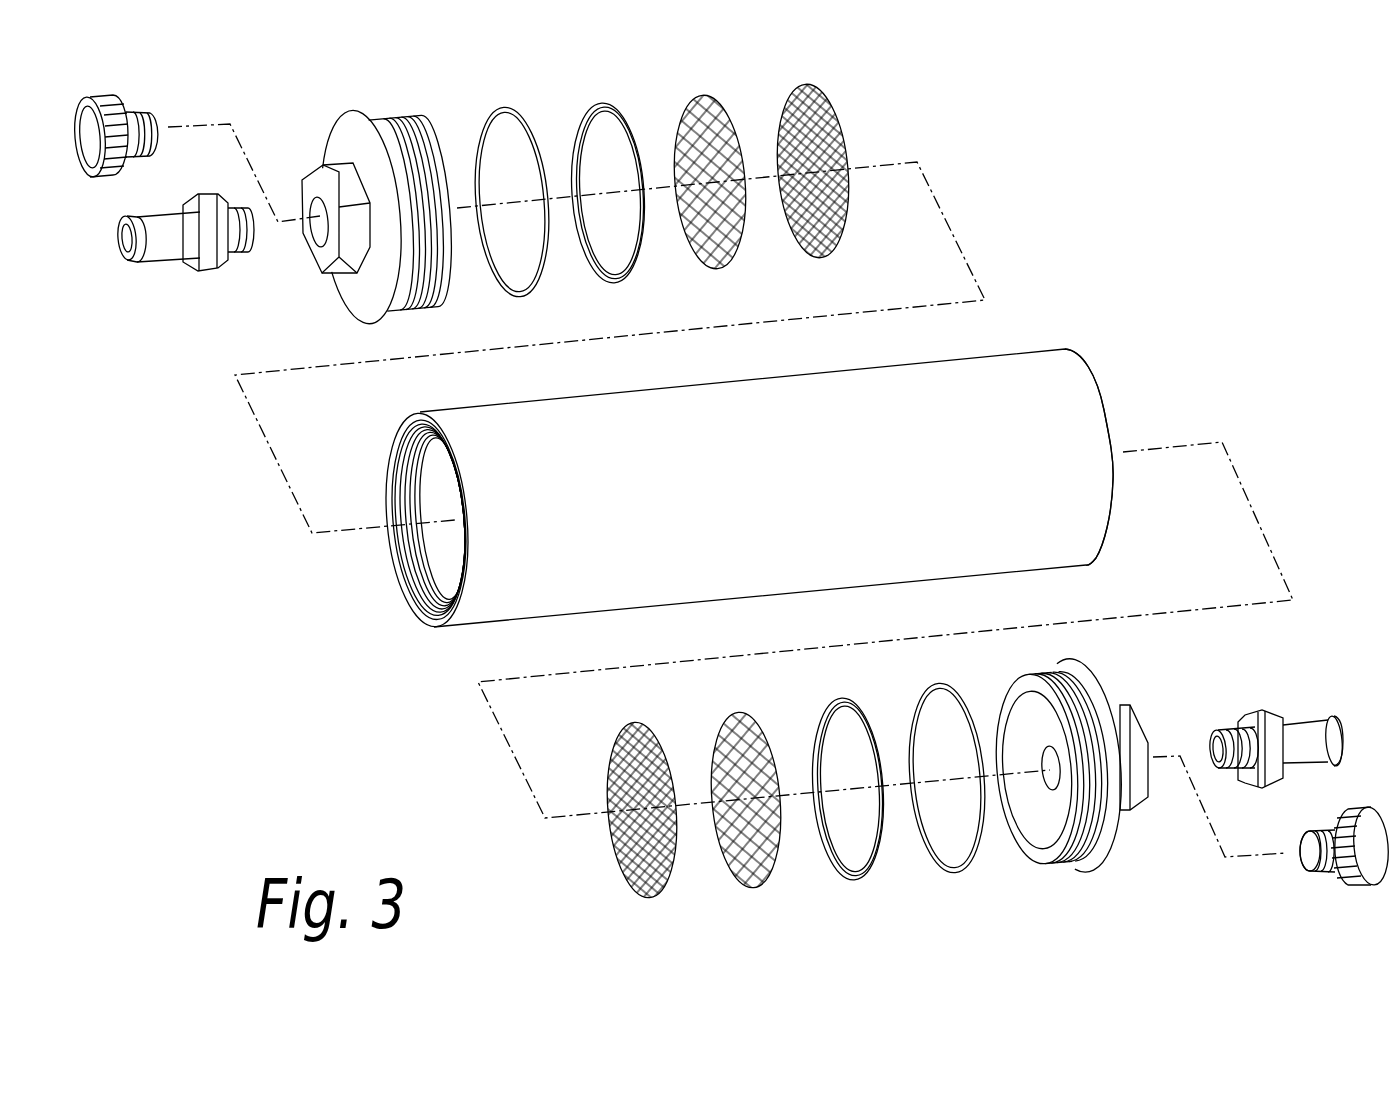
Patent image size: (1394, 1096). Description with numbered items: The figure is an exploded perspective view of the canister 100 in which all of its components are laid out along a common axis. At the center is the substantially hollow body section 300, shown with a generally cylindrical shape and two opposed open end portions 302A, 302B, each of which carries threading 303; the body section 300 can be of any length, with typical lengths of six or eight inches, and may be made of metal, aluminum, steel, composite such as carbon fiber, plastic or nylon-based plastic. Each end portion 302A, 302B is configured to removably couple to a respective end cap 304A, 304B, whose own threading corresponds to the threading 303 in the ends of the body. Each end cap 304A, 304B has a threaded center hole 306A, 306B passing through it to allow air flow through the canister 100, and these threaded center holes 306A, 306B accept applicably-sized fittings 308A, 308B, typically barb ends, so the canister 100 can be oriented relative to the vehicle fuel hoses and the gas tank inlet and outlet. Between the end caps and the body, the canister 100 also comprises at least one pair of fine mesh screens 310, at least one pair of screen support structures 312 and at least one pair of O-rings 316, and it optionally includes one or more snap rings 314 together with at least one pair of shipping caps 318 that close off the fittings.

The canister 100 is at (1120, 155).
The body section 300 is at (746, 492).
The end portion 302A is at (375, 598).
The end portion 302B is at (1122, 387).
The threading 303 is at (418, 490).
The end cap 304A is at (676, 489).
The end cap 304B is at (1115, 774).
The center hole 306A is at (320, 233).
The center hole 306B is at (1045, 787).
The fitting 308A is at (165, 272).
The fitting 308B is at (1295, 710).
The fine mesh screen 310 is at (815, 130).
The screen support structure 312 is at (715, 105).
The snap ring 314 is at (614, 110).
The O-ring 316 is at (520, 110).
The shipping cap 318 is at (125, 103).